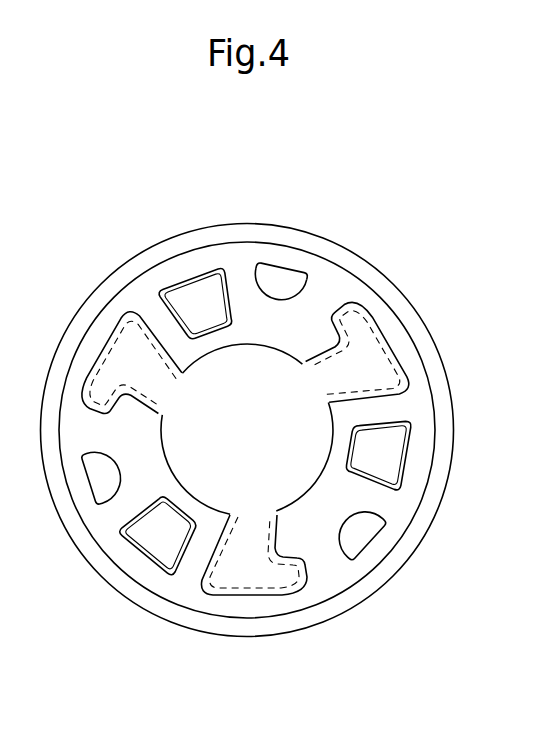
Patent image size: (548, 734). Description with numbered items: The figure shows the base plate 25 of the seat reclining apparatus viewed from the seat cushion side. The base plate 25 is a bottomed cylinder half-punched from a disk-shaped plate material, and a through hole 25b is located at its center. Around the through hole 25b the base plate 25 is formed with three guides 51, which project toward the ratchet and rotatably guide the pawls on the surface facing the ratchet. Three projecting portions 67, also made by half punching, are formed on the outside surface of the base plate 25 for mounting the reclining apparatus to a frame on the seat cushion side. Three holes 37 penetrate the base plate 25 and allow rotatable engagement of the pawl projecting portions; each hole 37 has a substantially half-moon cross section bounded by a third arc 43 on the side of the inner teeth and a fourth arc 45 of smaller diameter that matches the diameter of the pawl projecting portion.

The base plate 25 is at (417, 465).
The through hole 25b is at (193, 357).
The guide 51 is at (127, 353).
The projecting portion 67 is at (400, 438).
The third arc 43 is at (234, 374).
The fourth arc 45 is at (251, 280).
The hole 37 is at (295, 280).